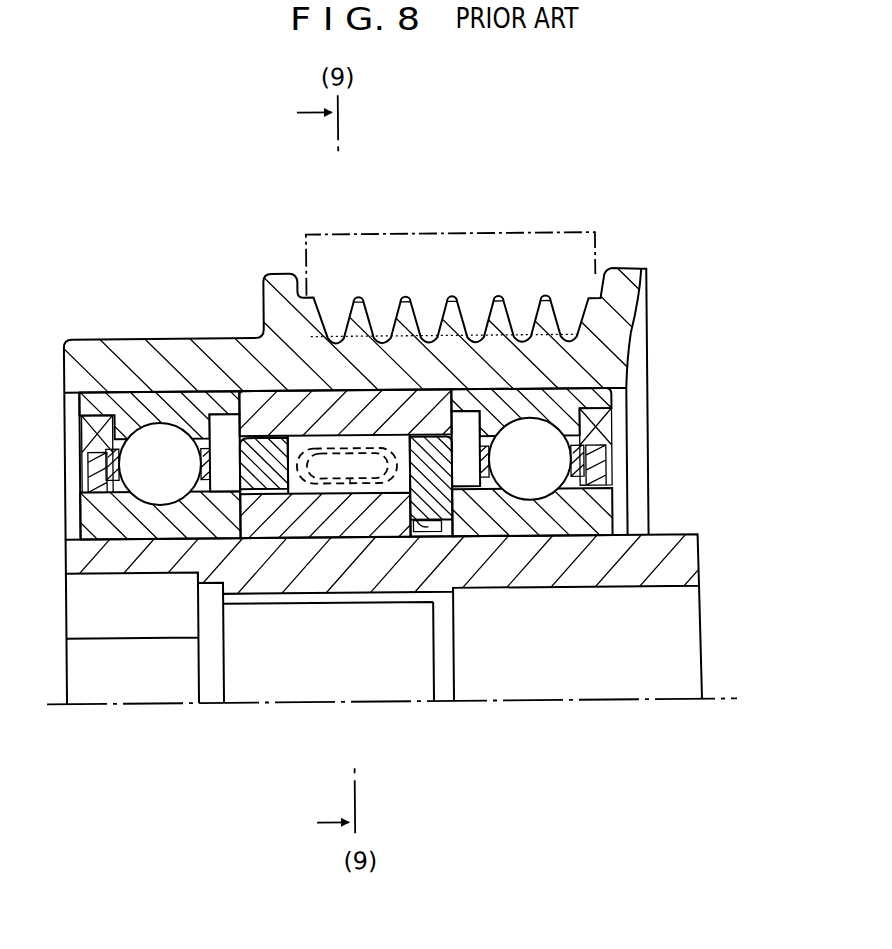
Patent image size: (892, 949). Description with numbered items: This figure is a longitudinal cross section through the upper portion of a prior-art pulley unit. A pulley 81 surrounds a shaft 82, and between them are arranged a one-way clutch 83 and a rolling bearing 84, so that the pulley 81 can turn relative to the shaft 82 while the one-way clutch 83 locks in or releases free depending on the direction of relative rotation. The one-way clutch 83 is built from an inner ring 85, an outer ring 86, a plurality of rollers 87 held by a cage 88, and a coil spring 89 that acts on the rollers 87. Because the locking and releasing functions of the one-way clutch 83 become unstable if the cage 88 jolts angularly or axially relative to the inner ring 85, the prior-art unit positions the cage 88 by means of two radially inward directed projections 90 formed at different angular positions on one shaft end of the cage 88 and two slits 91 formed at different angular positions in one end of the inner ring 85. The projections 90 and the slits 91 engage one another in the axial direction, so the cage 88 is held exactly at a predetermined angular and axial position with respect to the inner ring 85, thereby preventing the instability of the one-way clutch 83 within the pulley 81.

The pulley 81 is at (640, 272).
The shaft 82 is at (694, 557).
The one-way clutch 83 is at (301, 385).
The rolling bearing 84 is at (139, 386).
The inner ring 85 is at (325, 527).
The outer ring 86 is at (363, 410).
The rollers 87 is at (303, 492).
The cage 88 is at (267, 452).
The coil spring 89 is at (357, 483).
The projections 90 is at (441, 521).
The slits 91 is at (427, 524).